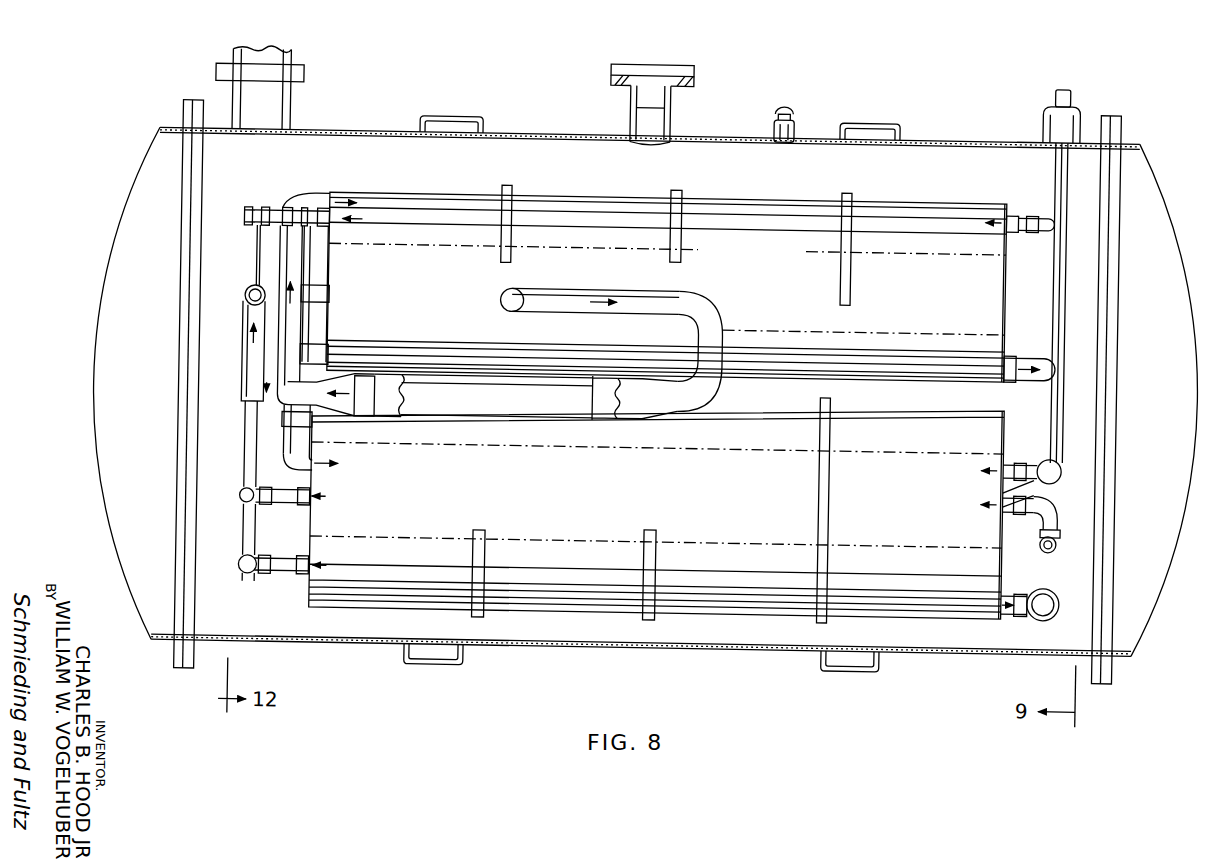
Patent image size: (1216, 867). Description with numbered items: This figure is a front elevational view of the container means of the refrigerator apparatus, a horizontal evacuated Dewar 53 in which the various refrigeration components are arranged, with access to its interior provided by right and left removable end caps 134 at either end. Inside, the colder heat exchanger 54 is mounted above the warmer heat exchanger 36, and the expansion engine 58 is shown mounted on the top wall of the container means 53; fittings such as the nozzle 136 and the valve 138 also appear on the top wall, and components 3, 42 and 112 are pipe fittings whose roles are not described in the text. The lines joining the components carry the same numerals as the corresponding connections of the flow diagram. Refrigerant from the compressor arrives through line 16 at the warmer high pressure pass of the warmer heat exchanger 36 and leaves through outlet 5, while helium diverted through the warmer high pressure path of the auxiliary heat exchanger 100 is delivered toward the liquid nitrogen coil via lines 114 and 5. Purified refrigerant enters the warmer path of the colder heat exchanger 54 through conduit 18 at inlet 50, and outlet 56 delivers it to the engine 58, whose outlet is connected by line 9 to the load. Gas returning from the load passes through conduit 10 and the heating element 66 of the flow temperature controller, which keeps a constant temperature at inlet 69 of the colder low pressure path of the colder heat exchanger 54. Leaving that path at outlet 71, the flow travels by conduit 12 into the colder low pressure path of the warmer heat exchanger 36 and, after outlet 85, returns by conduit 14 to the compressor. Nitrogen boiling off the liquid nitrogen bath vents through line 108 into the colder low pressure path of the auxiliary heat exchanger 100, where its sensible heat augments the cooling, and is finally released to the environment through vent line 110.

The inlet pipe fitting 3 is at (276, 206).
The outlet 5 is at (252, 457).
The line 9 is at (248, 331).
The conduit 10 is at (287, 255).
The conduit 12 is at (321, 346).
The conduit 14 is at (1032, 603).
The line 16 is at (1032, 449).
The conduit 18 is at (1031, 218).
The warmer heat exchanger 36 is at (767, 608).
The fitting 42 is at (320, 551).
The inlet 50 is at (1017, 215).
The horizontal evacuated Dewar 53 is at (943, 122).
The colder heat exchanger 54 is at (627, 188).
The outlet 56 is at (330, 225).
The expansion engine 58 is at (232, 52).
The heating element 66 is at (398, 413).
The inlet 69 is at (329, 190).
The outlet 71 is at (1010, 347).
The outlet 85 is at (1008, 588).
The auxiliary heat exchanger 100 is at (1018, 508).
The line 108 is at (302, 466).
The vent line 110 is at (1076, 90).
The elbow 112 is at (1060, 494).
The line 114 is at (297, 503).
The removable end caps 134 is at (106, 338).
The nozzle 136 is at (664, 116).
The valve 138 is at (785, 110).